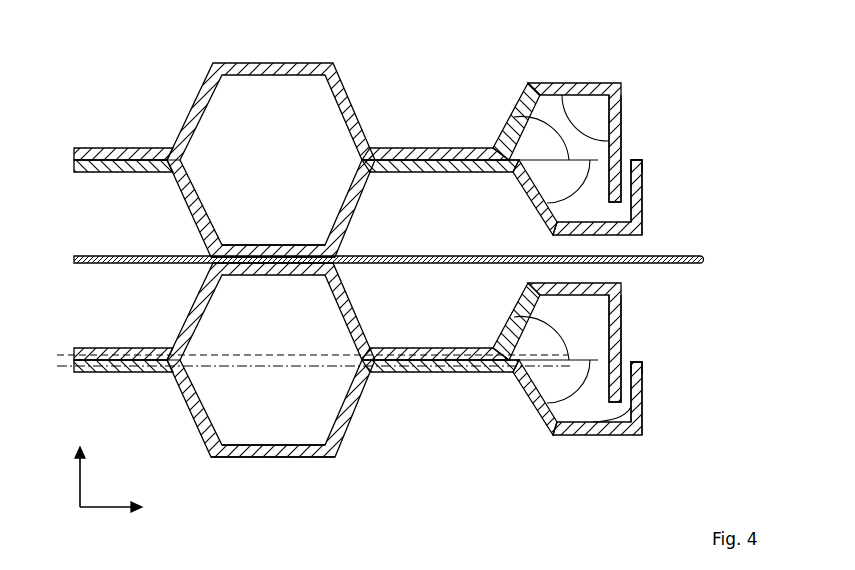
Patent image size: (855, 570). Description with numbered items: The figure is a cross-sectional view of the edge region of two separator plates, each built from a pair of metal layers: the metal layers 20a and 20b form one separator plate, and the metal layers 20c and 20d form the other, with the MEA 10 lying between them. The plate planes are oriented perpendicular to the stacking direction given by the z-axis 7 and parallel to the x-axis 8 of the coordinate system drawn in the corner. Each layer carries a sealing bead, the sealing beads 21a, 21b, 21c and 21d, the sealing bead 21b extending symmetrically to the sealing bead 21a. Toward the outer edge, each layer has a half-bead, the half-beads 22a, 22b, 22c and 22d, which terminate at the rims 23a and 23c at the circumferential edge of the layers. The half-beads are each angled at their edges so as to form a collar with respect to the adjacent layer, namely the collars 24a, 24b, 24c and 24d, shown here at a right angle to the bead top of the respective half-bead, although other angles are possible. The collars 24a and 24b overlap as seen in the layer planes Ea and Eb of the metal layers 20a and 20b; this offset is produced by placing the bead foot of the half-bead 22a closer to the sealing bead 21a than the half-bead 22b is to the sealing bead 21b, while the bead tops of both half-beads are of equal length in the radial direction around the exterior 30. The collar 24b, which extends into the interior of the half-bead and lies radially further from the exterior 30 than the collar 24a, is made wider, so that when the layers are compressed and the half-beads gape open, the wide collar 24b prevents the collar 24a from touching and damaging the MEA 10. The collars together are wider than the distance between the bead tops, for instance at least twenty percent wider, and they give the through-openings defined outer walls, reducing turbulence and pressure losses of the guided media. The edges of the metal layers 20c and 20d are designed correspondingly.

The MEA 10 is at (705, 257).
The exterior 30 is at (752, 299).
The sealing bead 21a is at (298, 450).
The sealing bead 21b is at (272, 272).
The sealing bead 21c is at (287, 248).
The sealing bead 21d is at (278, 64).
The half-bead 22a is at (600, 437).
The half-bead 22b is at (570, 298).
The half-bead 22c is at (573, 228).
The half-bead 22d is at (580, 86).
The metal layer 20a is at (641, 428).
The metal layer 20b is at (613, 318).
The metal layer 20c is at (637, 207).
The metal layer 20d is at (614, 106).
The rim 23a is at (643, 364).
The rim 23c is at (643, 163).
The collar 24a is at (622, 411).
The collar 24b is at (614, 370).
The collar 24c is at (641, 196).
The collar 24d is at (617, 146).
The layer plane Ea is at (66, 369).
The layer plane Eb is at (66, 353).
The z-axis 7 is at (77, 466).
The x-axis 8 is at (95, 510).